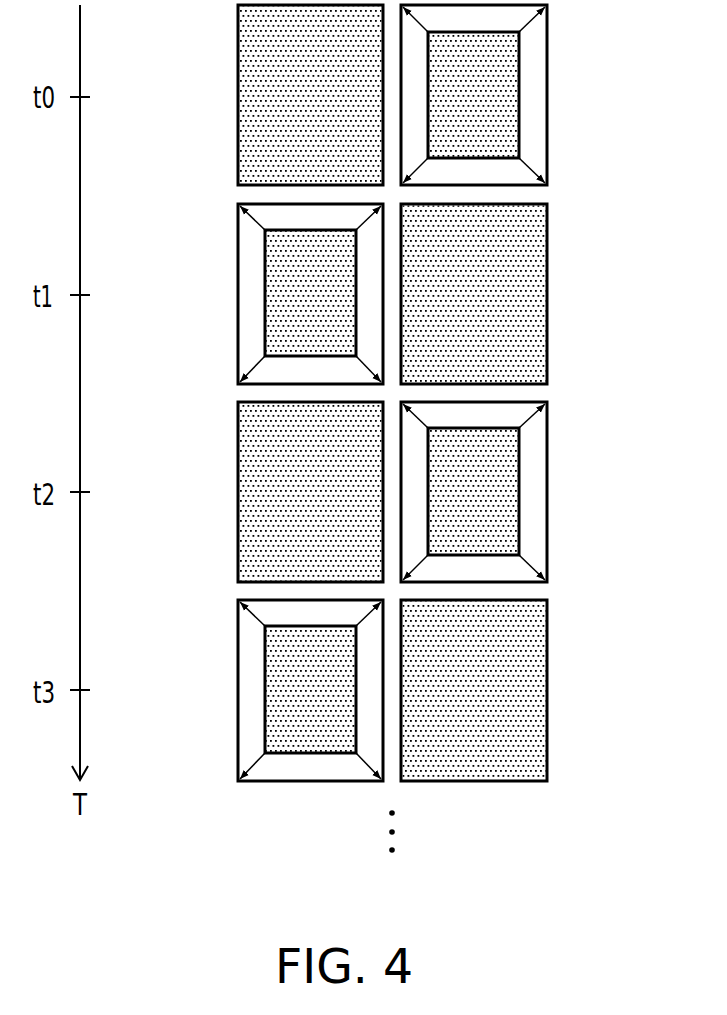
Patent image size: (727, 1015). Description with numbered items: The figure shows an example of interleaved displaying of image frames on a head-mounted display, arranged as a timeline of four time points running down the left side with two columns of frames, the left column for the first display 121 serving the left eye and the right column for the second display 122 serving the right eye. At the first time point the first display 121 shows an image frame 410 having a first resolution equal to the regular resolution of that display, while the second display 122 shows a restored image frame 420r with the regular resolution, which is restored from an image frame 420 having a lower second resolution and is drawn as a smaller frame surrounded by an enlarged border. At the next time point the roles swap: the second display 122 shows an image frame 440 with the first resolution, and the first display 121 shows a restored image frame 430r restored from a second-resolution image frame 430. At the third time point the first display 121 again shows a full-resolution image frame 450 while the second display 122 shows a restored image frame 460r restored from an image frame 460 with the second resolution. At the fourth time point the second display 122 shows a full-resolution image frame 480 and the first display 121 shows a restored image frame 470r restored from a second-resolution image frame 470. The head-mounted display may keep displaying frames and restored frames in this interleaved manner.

The first display 121 is at (238, 152).
The second display 122 is at (547, 152).
The image frame 410 is at (283, 100).
The image frame 420 is at (500, 52).
The restored image frame 420r is at (530, 104).
The image frame 430 is at (283, 252).
The restored image frame 430r is at (253, 303).
The image frame 440 is at (500, 297).
The image frame 450 is at (283, 495).
The image frame 460 is at (500, 449).
The restored image frame 460r is at (530, 500).
The image frame 470 is at (283, 647).
The restored image frame 470r is at (253, 698).
The image frame 480 is at (500, 694).